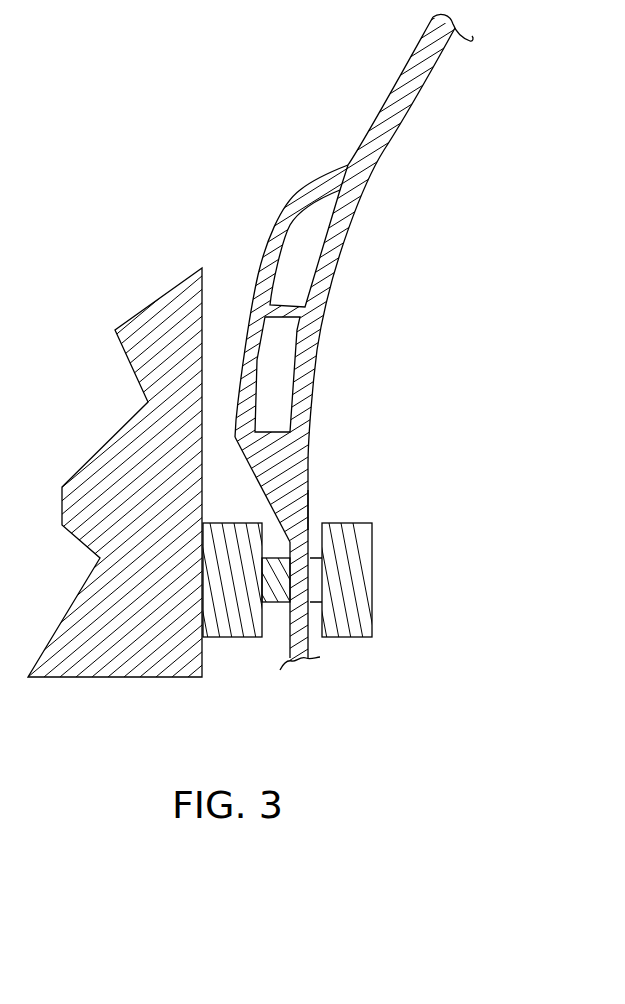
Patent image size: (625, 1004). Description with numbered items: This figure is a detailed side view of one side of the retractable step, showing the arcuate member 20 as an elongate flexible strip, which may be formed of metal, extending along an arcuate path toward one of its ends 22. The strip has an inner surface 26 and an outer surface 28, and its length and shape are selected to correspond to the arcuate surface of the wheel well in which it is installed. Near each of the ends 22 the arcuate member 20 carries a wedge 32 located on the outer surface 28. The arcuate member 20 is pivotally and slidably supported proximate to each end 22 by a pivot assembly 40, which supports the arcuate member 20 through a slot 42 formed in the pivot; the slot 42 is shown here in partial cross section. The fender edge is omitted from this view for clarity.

The arcuate member 20 is at (397, 128).
The ends 22 is at (300, 667).
The inner surface 26 is at (349, 272).
The outer surface 28 is at (399, 83).
The wedge 32 is at (268, 453).
The pivot assembly 40 is at (398, 579).
The slot 42 is at (326, 502).